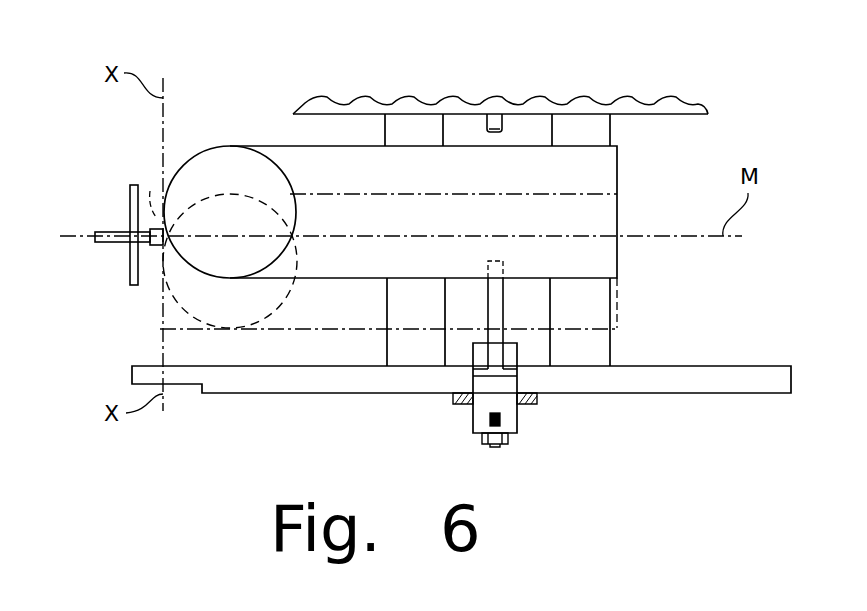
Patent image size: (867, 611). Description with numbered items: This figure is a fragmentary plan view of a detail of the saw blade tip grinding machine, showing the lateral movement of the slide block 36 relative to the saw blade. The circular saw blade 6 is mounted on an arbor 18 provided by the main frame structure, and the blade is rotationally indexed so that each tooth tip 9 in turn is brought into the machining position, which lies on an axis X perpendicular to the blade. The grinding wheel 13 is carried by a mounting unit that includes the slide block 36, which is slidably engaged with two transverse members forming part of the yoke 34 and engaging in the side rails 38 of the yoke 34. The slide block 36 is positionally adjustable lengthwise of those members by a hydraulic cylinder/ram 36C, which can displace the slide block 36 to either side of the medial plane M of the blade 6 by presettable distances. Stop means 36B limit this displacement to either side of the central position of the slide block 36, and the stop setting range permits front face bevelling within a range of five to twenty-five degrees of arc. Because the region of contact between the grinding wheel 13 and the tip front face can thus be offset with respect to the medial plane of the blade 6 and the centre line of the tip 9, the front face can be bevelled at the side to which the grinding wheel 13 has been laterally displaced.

The circular saw blade 6 is at (105, 240).
The tooth tip 9 is at (164, 193).
The grinding wheel 13 is at (232, 170).
The arbor 18 is at (130, 208).
The yoke 34 is at (320, 103).
The slide block 36 is at (376, 186).
The stop means 36B is at (497, 113).
The hydraulic cylinder/ram 36C is at (480, 413).
The side rails 38 is at (265, 378).